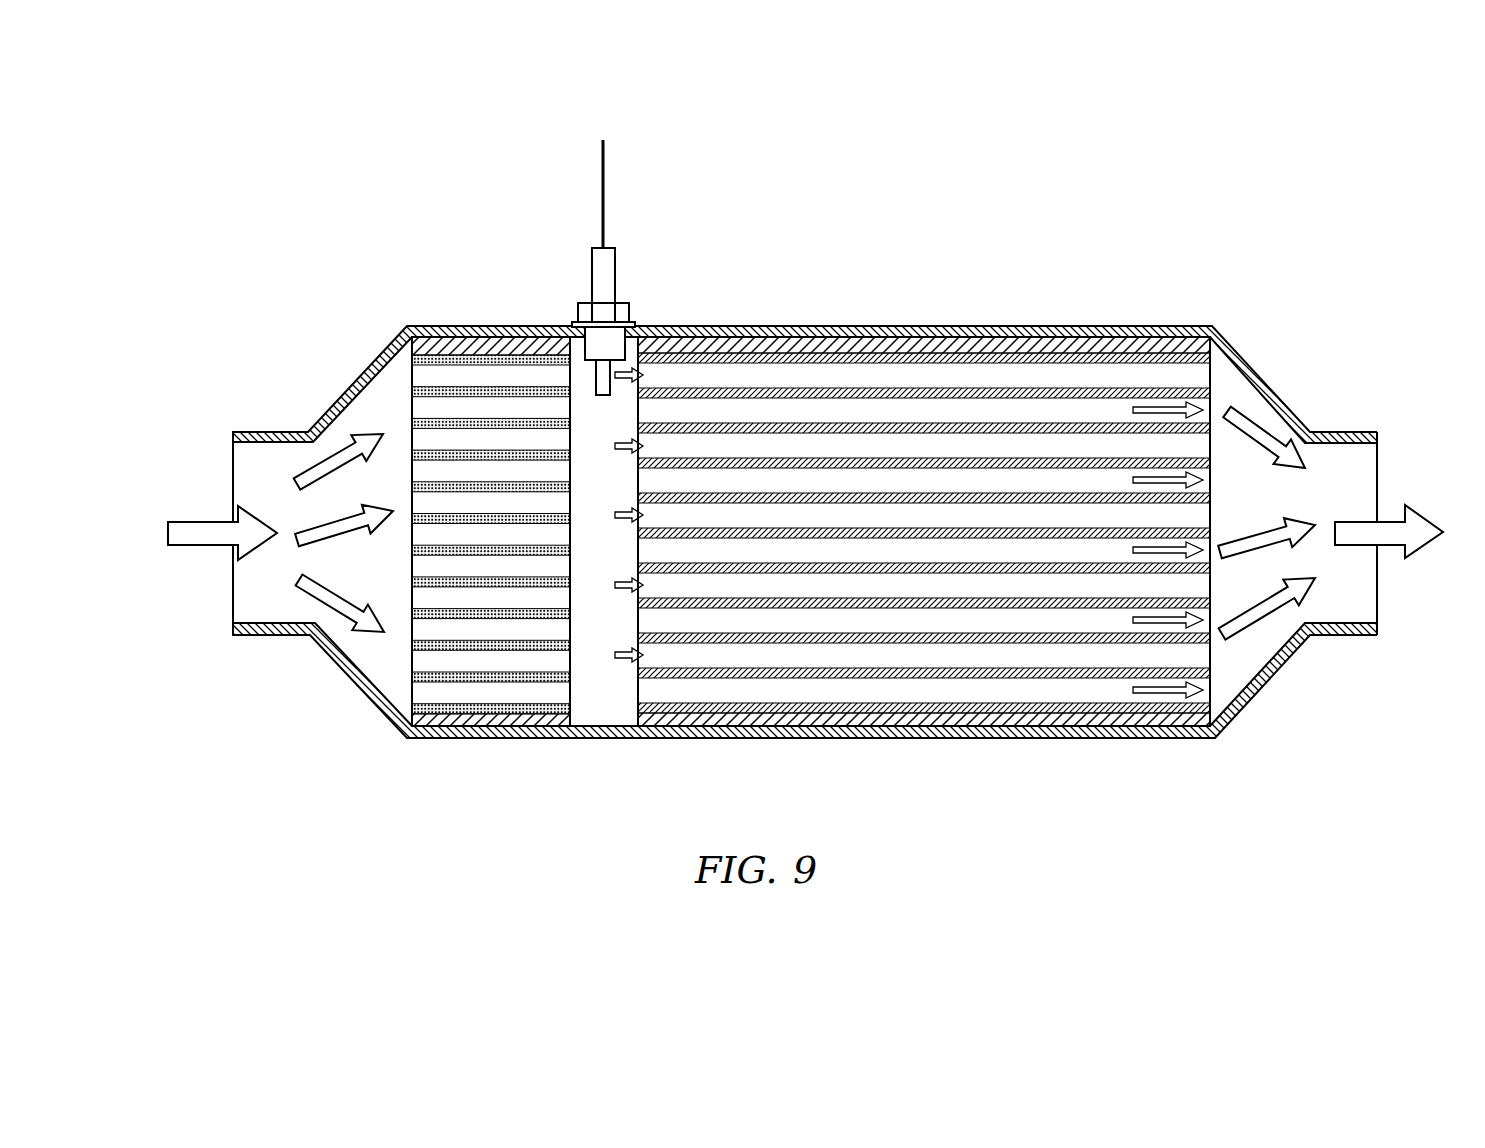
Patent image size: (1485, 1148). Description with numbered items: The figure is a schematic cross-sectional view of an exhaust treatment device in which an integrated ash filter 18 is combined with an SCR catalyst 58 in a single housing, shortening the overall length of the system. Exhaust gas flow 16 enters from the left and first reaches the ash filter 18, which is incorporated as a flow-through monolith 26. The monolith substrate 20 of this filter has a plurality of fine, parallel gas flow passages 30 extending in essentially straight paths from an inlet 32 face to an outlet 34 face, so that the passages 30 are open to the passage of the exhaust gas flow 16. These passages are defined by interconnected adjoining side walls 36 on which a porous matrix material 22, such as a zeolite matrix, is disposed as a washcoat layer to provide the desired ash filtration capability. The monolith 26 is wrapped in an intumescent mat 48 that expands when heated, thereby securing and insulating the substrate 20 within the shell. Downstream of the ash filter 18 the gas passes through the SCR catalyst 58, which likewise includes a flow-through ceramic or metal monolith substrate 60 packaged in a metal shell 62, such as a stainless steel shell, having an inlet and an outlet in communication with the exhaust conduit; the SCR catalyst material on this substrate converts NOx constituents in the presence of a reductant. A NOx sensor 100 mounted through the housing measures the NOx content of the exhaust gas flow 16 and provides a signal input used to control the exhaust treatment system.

The exhaust gas flow 16 is at (200, 528).
The ash filter 18 is at (530, 738).
The substrate 20 is at (433, 648).
The porous matrix material 22 is at (441, 642).
The flow-through monolith 26 is at (572, 688).
The gas flow passages 30 is at (567, 632).
The inlet face 32 is at (412, 530).
The outlet face 34 is at (573, 502).
The side walls 36 is at (433, 387).
The intumescent mat 48 is at (500, 348).
The SCR catalyst 58 is at (1042, 740).
The monolith substrate 60 is at (1210, 655).
The metal shell 62 is at (1128, 326).
The NOx sensor 100 is at (617, 275).